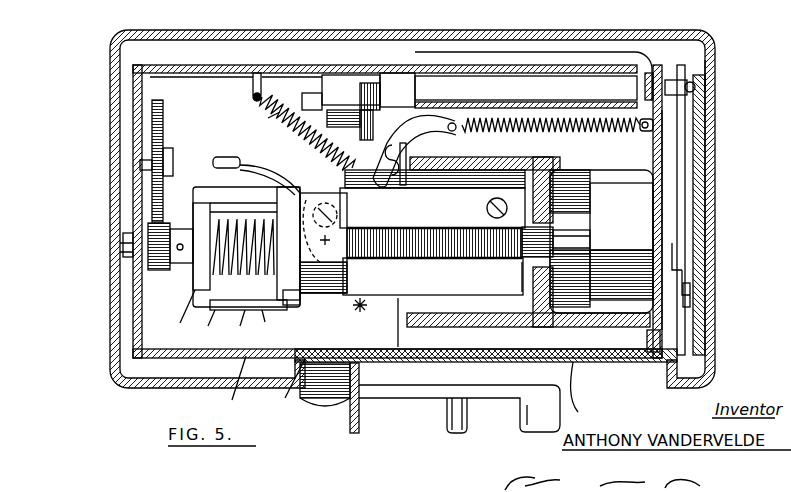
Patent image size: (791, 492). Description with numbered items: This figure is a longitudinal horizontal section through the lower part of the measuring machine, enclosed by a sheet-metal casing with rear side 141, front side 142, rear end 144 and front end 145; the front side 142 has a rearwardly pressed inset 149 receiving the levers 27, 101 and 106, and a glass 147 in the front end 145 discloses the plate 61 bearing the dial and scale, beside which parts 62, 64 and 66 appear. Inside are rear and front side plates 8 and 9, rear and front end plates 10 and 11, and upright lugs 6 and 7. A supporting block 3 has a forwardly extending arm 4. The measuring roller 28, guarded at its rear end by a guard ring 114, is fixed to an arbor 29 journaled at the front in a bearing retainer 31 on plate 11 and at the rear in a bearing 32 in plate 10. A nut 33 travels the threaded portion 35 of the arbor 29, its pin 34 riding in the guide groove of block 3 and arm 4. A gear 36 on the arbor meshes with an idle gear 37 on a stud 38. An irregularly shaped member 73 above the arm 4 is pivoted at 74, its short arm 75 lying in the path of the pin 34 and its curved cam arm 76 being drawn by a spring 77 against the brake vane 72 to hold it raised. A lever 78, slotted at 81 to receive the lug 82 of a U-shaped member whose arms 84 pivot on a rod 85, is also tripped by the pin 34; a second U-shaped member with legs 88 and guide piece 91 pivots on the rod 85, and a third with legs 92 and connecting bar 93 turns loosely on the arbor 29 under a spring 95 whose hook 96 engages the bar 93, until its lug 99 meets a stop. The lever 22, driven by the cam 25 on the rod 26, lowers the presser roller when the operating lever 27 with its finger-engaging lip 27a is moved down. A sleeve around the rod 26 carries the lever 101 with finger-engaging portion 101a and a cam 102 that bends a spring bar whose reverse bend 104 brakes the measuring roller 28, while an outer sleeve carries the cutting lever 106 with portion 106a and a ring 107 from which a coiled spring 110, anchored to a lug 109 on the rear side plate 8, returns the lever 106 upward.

The supporting block 3 is at (295, 352).
The forwardly extending arm 4 is at (462, 318).
The upright lug 6 is at (320, 112).
The upright lug 7 is at (340, 83).
The rear side plate 8 is at (364, 83).
The front side plate 9 is at (231, 388).
The rear end plate 10 is at (138, 333).
The front end plate 11 is at (660, 226).
The lever 22 is at (418, 100).
The cam 25 is at (400, 100).
The rod 26 is at (310, 0).
The operating lever 27 is at (425, 399).
The bar end 27a is at (528, 422).
The measuring roller 28 is at (600, 368).
The arbor 29 is at (556, 244).
The coil housing 31 is at (648, 205).
The bearing 32 is at (130, 262).
The nut 33 is at (433, 276).
The pin 34 is at (368, 307).
The threaded portion 35 is at (506, 277).
The gear 36 is at (160, 272).
The idle gear 37 is at (152, 125).
The stud 38 is at (163, 160).
The plate 61 is at (684, 155).
The hook 62 is at (676, 256).
The hook 64 is at (686, 280).
The hook end 66 is at (690, 300).
The brake plate or vane 72 is at (640, 83).
The irregularly shaped member 73 is at (447, 212).
The pivot 74 is at (520, 170).
The short arm 75 is at (487, 208).
The cam arm 76 is at (415, 118).
The spring 77 is at (580, 120).
The lever 78 is at (268, 160).
The slot 81 is at (240, 172).
The lug 82 is at (215, 158).
The arms 84 is at (278, 196).
The rod 85 is at (152, 220).
The legs 88 is at (262, 316).
The guide piece 91 is at (265, 325).
The legs 92 is at (303, 298).
The connecting bar 93 is at (237, 327).
The spring 95 is at (243, 255).
The hook 96 is at (205, 327).
The lug 99 is at (290, 305).
The operating lever 101 is at (408, 392).
The finger engaging portion 101a is at (448, 412).
The cam 102 is at (310, 136).
The reverse bend 104 is at (406, 147).
The operating handle or lever 106 is at (318, 372).
The finger engaging portion 106a is at (356, 434).
The ring 107 is at (365, 200).
The lug 109 is at (252, 84).
The coiled spring 110 is at (258, 124).
The guard ring 114 is at (398, 320).
The rear side 141 is at (440, 52).
The front side 142 is at (280, 389).
The rear end 144 is at (128, 243).
The front end 145 is at (713, 73).
The glass 147 is at (702, 126).
The inset 149 is at (587, 395).